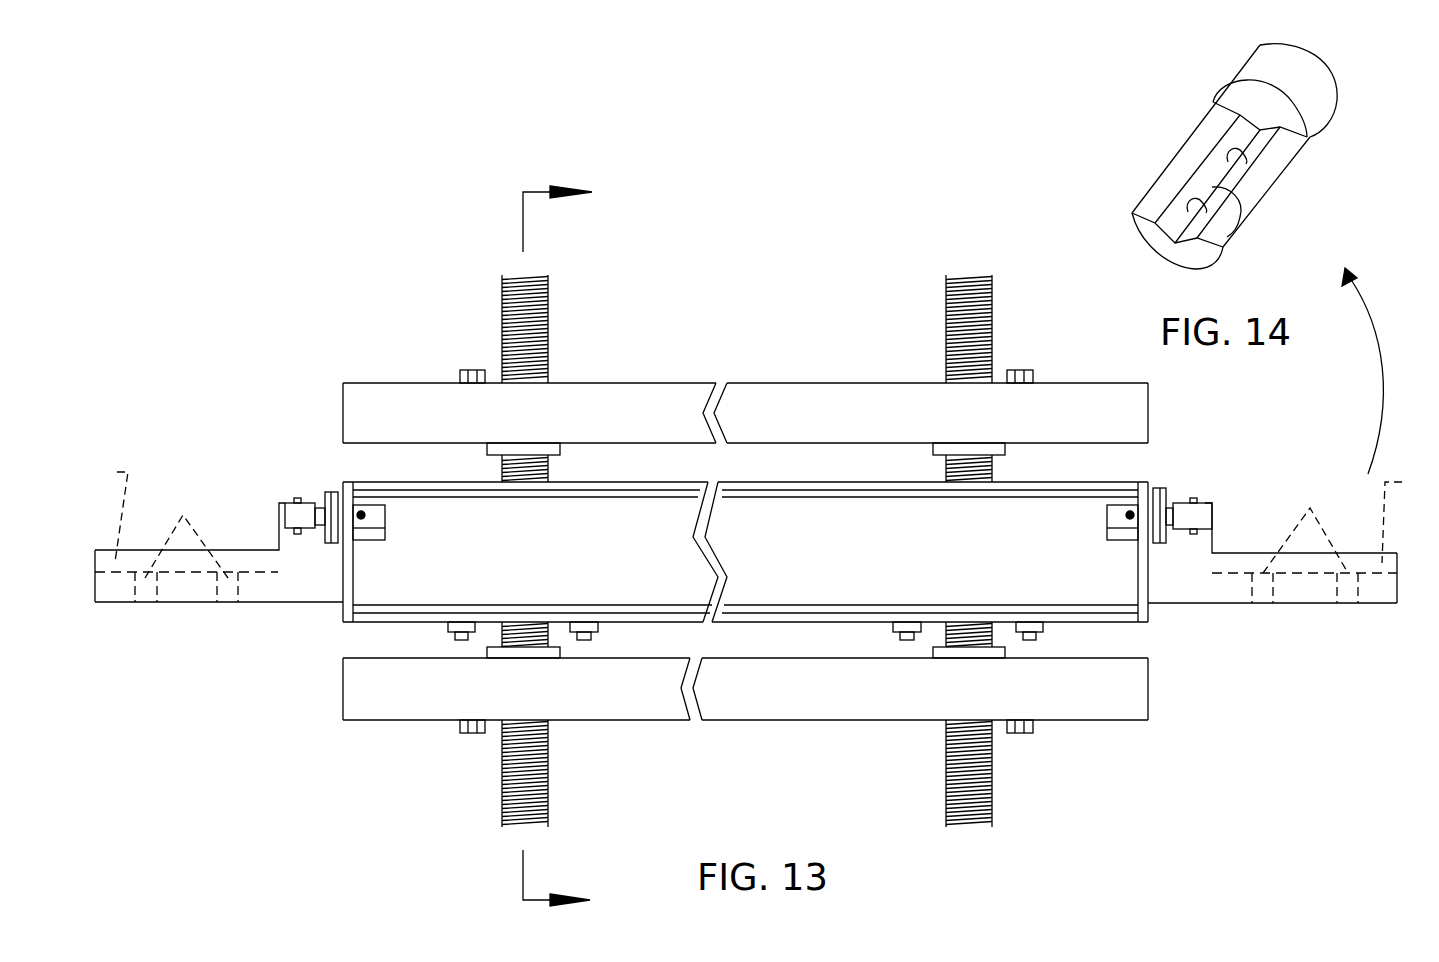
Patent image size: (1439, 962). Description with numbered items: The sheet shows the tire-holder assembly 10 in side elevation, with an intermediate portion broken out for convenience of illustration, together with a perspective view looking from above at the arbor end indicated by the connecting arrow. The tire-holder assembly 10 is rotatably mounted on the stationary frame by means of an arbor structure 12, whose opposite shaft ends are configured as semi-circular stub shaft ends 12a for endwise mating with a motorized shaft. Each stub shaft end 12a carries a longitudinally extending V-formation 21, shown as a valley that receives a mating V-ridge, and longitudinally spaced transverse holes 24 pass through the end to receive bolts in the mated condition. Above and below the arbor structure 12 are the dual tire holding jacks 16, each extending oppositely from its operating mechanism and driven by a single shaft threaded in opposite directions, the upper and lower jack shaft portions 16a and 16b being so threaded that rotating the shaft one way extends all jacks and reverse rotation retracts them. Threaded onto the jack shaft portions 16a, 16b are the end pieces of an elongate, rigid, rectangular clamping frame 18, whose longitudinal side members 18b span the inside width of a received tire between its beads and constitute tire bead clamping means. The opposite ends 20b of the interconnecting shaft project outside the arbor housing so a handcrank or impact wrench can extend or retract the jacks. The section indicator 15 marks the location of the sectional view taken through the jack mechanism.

In FIG. 13, the tire-holder assembly 10 is at (322, 665).
In FIG. 13, the arbor structure 12 is at (790, 566).
In FIG. 13, the stub shaft end of arbor 12a is at (188, 600).
In FIG. 14, the stub shaft end of arbor 12a is at (1277, 180).
In FIG. 13, the wheels 15 is at (524, 551).
In FIG. 13, the dual tire holding jacks 16 is at (488, 348).
In FIG. 13, the jack shaft portion 16a is at (548, 330).
In FIG. 13, the jack shaft portion 16b is at (548, 770).
In FIG. 13, the clamping frame 18 is at (765, 376).
In FIG. 13, the longitudinal side members 18b is at (342, 422).
In FIG. 13, the shaft ends 20b is at (303, 510).
In FIG. 13, the V-formation 21 is at (759, 513).
In FIG. 14, the V-formation 21 is at (1237, 233).
In FIG. 13, the transverse holes 24 is at (746, 532).
In FIG. 14, the transverse holes 24 is at (1240, 165).